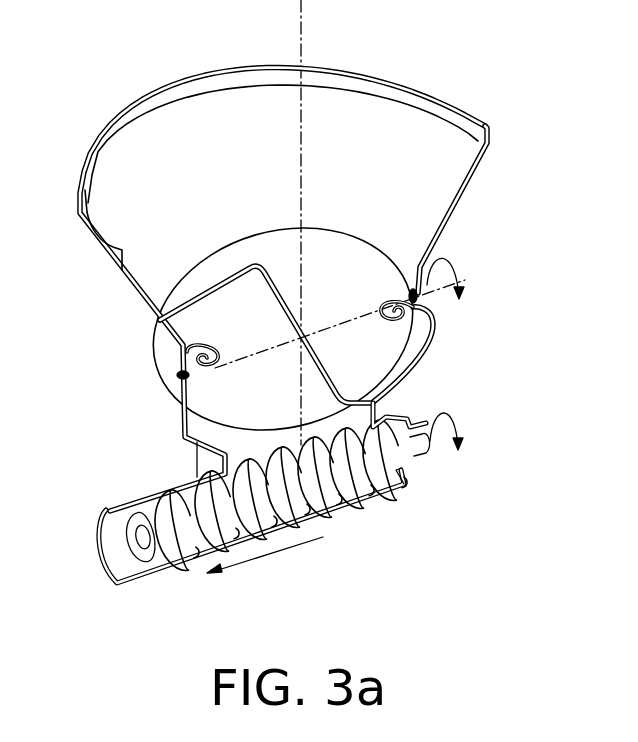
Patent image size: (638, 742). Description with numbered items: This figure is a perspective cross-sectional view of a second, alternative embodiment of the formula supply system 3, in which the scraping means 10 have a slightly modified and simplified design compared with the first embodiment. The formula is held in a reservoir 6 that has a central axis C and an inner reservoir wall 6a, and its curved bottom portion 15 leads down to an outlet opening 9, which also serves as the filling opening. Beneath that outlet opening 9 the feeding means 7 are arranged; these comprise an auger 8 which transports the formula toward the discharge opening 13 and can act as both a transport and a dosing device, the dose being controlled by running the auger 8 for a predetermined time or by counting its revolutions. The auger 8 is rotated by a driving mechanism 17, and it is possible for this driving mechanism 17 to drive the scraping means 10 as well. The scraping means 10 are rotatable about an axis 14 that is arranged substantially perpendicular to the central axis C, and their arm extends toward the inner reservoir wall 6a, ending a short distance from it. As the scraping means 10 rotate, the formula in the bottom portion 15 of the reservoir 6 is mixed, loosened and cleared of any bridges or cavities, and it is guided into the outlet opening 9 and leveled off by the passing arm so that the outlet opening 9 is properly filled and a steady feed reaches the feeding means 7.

The formula supply system 3 is at (119, 74).
The central axis C is at (302, 12).
The reservoir 6 is at (460, 107).
The inner reservoir wall 6a is at (447, 170).
The feeding means 7 is at (387, 473).
The auger 8 is at (360, 500).
The outlet opening 9 is at (343, 422).
The scraping means 10 is at (433, 353).
The discharge opening 13 is at (117, 542).
The axis 14 is at (455, 285).
The bottom portion 15 is at (207, 402).
The driving mechanism 17 is at (423, 453).